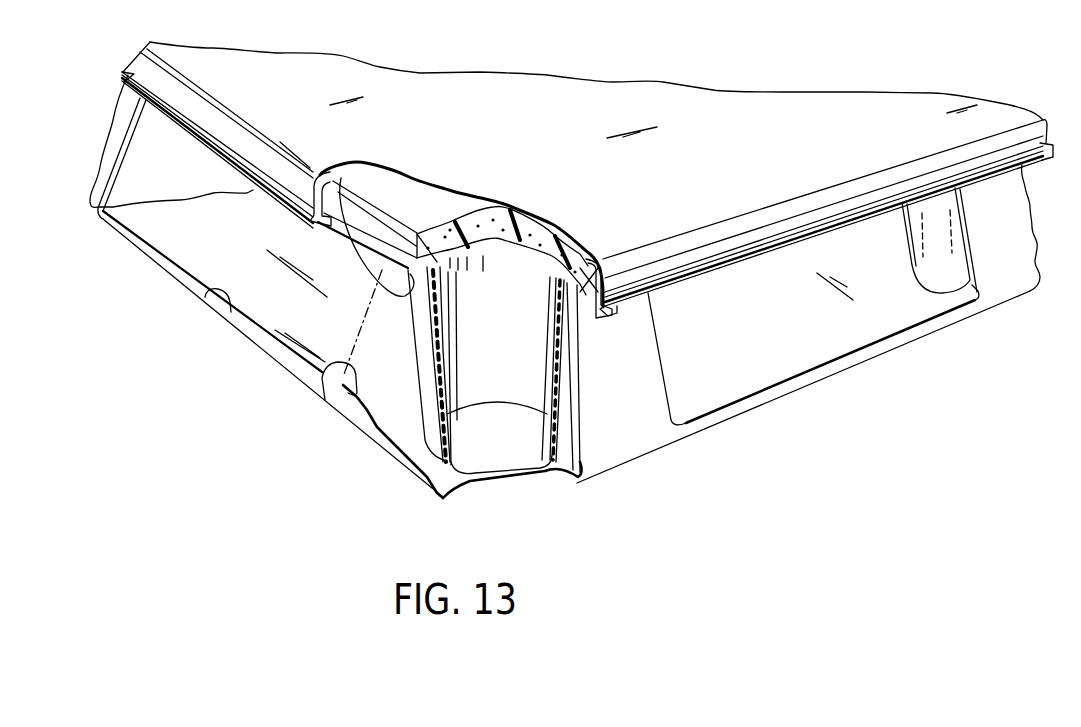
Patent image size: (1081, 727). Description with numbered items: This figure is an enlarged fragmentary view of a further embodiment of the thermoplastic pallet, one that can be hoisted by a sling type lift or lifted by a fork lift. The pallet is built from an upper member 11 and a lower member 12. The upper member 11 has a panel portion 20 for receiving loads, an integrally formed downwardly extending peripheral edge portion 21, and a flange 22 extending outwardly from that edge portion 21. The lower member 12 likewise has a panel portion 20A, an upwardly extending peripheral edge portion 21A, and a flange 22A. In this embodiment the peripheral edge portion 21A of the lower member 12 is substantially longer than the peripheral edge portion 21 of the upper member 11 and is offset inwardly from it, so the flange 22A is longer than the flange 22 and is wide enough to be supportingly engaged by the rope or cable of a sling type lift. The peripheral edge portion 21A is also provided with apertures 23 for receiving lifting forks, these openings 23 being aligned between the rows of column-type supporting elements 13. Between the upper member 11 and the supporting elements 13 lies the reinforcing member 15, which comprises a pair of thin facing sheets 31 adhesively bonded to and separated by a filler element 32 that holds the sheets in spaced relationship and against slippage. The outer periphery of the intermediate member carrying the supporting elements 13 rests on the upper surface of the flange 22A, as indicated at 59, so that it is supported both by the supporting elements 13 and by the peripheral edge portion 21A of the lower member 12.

The upper member 11 is at (733, 88).
The lower member 12 is at (822, 386).
The supporting elements 13 is at (913, 266).
The reinforcing member 15 is at (432, 219).
The panel portion 20 is at (578, 115).
The panel portion 20A is at (806, 335).
The peripheral edge portion 21 is at (236, 132).
The peripheral edge portion 21A is at (322, 397).
The flange 22 is at (683, 273).
The flange 22A is at (599, 311).
The openings 23 is at (207, 310).
The facing sheets 31 is at (452, 212).
The filler element 32 is at (500, 223).
The resting point of intermediate member on flange 59 is at (341, 178).